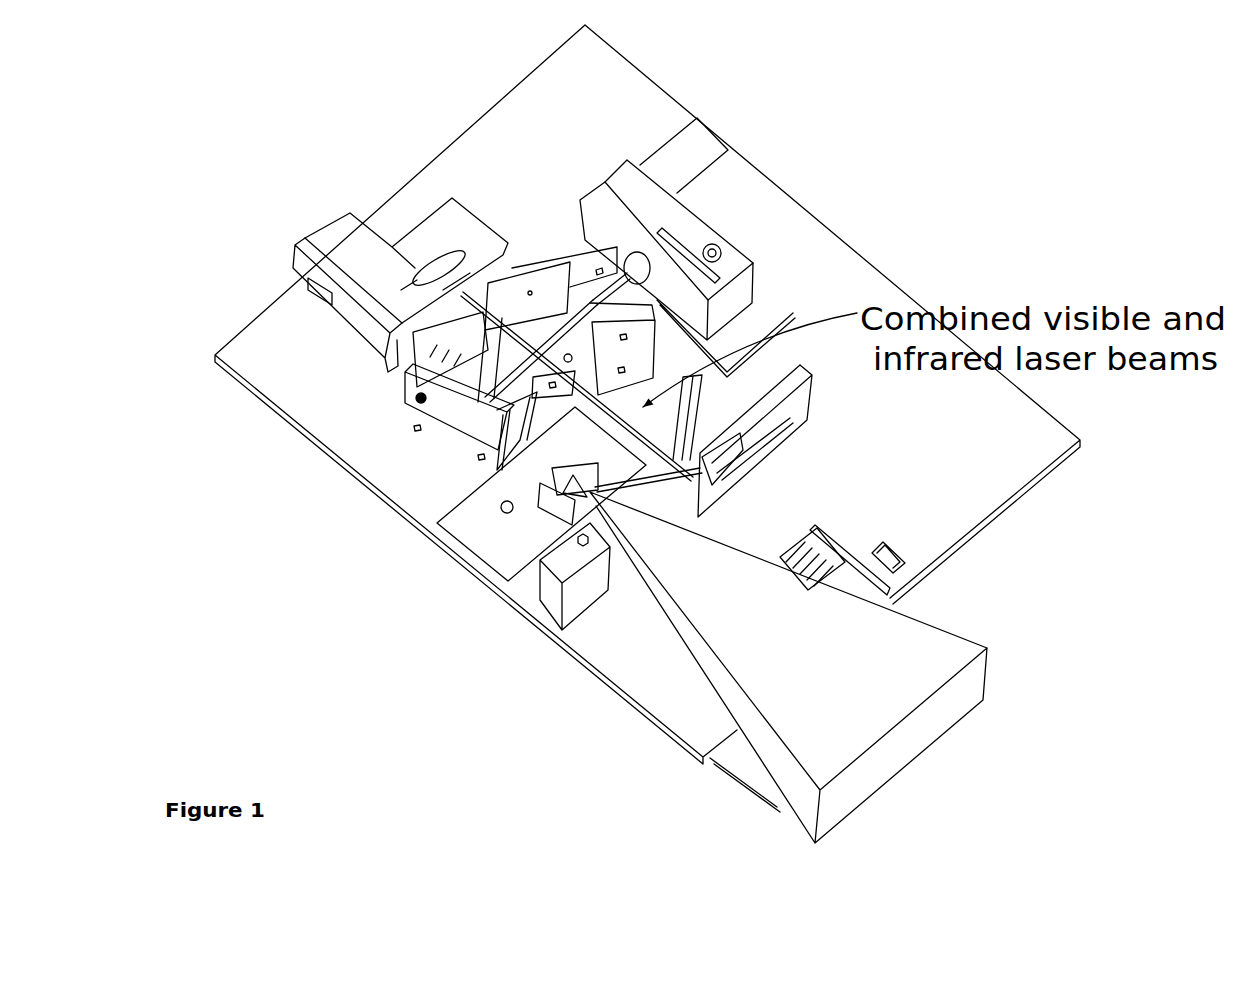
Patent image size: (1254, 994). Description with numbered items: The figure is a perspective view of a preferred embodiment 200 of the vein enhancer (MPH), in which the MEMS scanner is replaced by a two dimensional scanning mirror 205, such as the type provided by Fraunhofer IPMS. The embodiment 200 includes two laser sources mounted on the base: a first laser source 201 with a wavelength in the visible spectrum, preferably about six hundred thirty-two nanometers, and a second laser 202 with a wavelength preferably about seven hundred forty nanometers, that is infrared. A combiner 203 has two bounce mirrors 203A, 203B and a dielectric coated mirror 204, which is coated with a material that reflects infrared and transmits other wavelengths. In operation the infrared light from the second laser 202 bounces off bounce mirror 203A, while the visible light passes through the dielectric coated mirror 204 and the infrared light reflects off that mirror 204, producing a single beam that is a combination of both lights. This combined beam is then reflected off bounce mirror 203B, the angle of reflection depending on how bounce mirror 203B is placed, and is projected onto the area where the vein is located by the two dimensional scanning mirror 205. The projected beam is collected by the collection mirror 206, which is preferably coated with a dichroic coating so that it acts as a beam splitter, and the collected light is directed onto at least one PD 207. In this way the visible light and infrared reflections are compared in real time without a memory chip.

The preferred embodiment of the MPH 200 is at (630, 650).
The first laser source 201 is at (463, 273).
The second laser 202 is at (647, 273).
The combiner 203 is at (323, 413).
The bounce mirror 203A is at (507, 422).
The bounce mirror 203B is at (475, 422).
The dielectric coated mirror 204 is at (533, 297).
The two dimensional scanning mirror 205 is at (556, 511).
The collection mirror 206 is at (763, 456).
The PD 207 is at (803, 523).